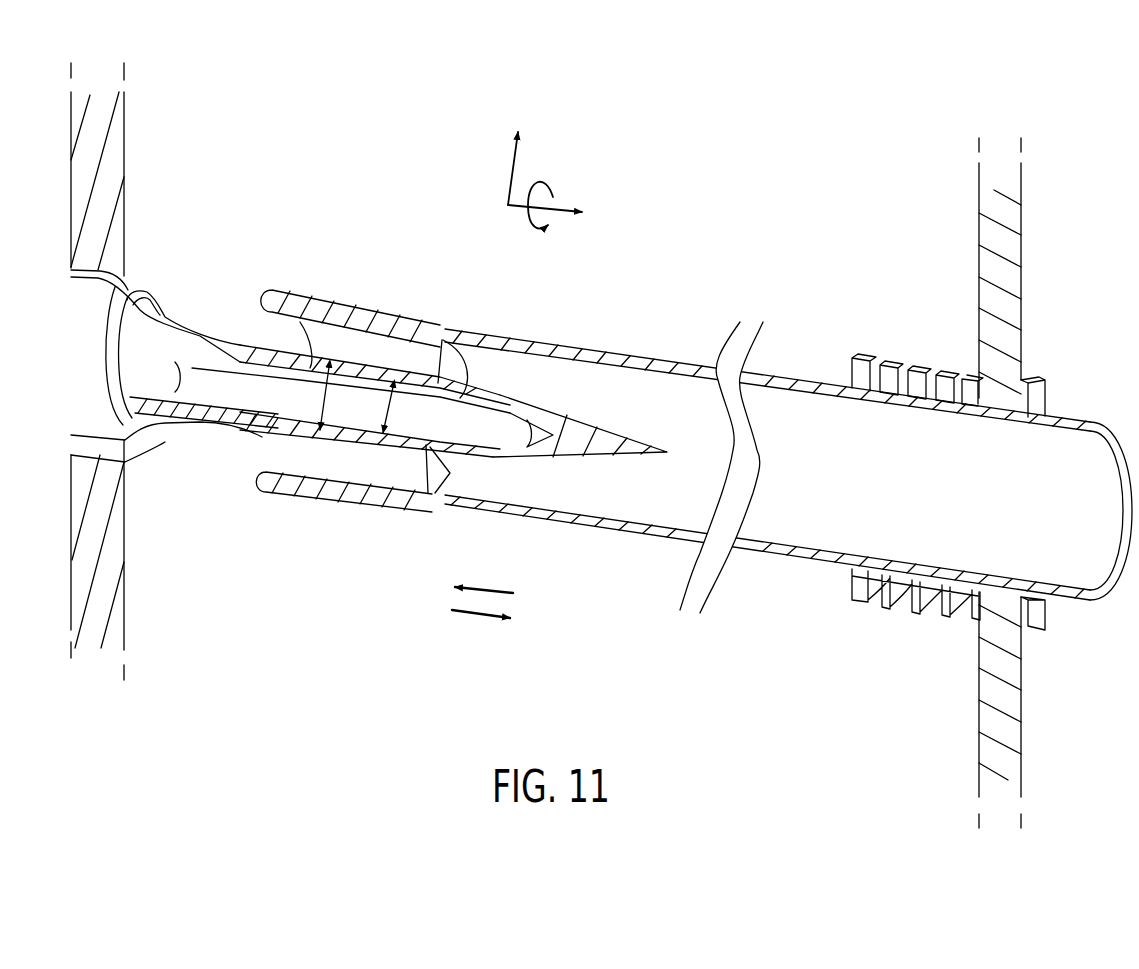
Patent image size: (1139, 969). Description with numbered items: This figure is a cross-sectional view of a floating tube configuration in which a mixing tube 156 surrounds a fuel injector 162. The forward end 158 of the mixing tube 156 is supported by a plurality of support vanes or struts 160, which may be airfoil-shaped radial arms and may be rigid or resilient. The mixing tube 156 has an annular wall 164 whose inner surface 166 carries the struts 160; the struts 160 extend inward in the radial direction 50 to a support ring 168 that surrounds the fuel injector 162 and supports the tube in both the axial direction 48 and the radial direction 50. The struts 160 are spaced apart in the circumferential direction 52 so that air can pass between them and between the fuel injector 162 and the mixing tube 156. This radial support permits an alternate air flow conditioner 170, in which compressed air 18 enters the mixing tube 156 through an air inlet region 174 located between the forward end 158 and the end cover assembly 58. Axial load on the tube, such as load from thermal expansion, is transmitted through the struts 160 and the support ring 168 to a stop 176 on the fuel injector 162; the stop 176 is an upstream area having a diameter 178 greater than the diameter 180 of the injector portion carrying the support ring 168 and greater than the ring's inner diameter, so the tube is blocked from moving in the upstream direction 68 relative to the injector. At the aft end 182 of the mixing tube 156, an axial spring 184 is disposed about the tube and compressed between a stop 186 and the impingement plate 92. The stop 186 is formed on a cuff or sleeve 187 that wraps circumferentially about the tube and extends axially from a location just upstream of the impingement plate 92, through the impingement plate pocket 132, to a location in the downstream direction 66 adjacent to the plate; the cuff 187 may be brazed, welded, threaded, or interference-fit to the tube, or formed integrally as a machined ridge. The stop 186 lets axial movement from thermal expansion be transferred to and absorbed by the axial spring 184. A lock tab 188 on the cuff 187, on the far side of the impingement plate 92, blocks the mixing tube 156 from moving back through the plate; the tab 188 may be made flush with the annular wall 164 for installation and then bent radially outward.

The compressed air 18 is at (224, 310).
The axial direction 48 is at (517, 215).
The radial direction 50 is at (510, 170).
The circumferential direction 52 is at (552, 190).
The end cover assembly 58 is at (125, 135).
The downstream direction 66 is at (477, 617).
The upstream direction 68 is at (485, 590).
The impingement plate 92 is at (979, 231).
The impingement plate pocket 132 is at (1000, 594).
The mixing tube 156 is at (655, 362).
The forward end 158 is at (300, 245).
The support vanes or struts 160 is at (400, 350).
The fuel injector 162 is at (503, 455).
The annular wall 164 is at (610, 358).
The inner surface 166 is at (483, 490).
The support ring 168 is at (393, 447).
The air flow conditioner 170 is at (150, 455).
The air inlet region 174 is at (184, 294).
The stop 176 is at (362, 433).
The diameter 178 is at (280, 397).
The diameter 180 is at (360, 407).
The aft end 182 is at (1065, 614).
The axial spring 184 is at (918, 362).
The stop 186 is at (860, 357).
The cuff or sleeve 187 is at (912, 580).
The lock tab 188 is at (1042, 398).